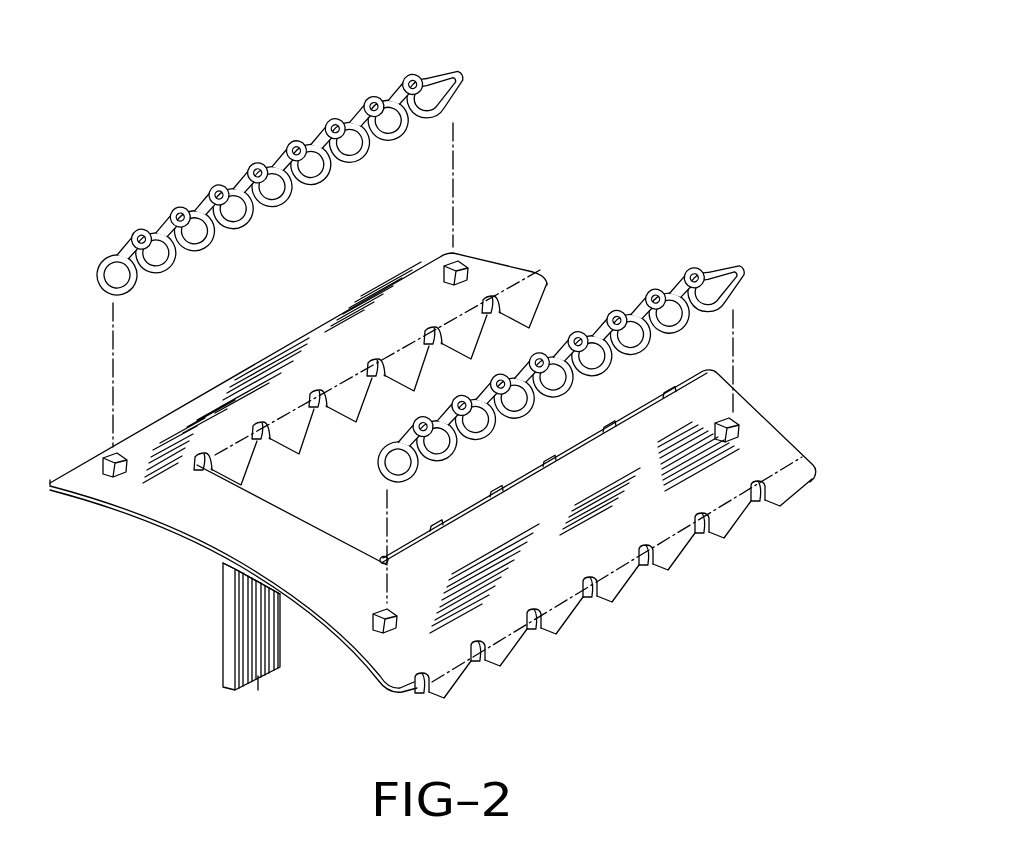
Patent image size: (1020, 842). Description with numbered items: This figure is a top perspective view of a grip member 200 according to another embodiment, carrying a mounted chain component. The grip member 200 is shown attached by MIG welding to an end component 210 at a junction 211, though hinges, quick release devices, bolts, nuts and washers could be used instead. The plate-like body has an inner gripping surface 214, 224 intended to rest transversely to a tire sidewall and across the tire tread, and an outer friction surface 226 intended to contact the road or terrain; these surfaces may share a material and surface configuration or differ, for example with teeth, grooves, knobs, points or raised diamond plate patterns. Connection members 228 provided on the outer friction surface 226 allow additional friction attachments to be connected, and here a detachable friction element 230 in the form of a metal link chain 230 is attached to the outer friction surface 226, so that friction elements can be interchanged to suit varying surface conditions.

The grip member 200 is at (665, 97).
The end component 210 is at (248, 630).
The post top connection 211 is at (227, 571).
The inner gripping surface 214 is at (526, 672).
The inner gripping surface 224 is at (326, 414).
The outer friction surface 226 is at (345, 364).
The connection members 228 is at (735, 421).
The friction element 230 is at (337, 130).